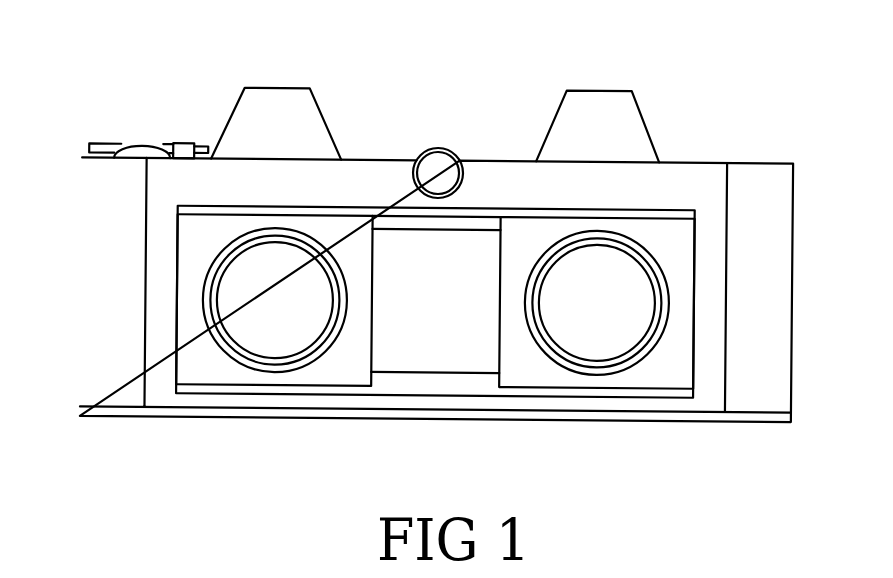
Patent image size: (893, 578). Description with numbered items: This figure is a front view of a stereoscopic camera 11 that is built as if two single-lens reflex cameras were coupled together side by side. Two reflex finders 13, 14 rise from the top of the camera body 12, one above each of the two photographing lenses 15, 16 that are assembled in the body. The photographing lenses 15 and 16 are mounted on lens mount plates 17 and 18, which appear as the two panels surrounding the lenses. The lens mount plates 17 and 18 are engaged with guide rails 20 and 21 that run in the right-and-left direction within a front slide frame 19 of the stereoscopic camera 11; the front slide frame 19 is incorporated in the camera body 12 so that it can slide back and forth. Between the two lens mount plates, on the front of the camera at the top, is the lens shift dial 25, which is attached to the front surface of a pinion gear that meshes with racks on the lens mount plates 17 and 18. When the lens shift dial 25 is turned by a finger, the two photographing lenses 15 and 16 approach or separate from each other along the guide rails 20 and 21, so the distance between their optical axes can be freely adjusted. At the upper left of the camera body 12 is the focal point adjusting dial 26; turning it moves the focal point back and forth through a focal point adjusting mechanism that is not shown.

The stereoscopic camera 11 is at (432, 118).
The camera body 12 is at (81, 228).
The reflex finder 13 is at (278, 89).
The reflex finder 14 is at (603, 91).
The photographing lens 15 is at (277, 340).
The photographing lens 16 is at (603, 340).
The lens mount plate 17 is at (200, 369).
The lens mount plate 18 is at (533, 372).
The front slide frame 19 is at (157, 298).
The guide rail 20 is at (398, 217).
The guide rail 21 is at (400, 385).
The lens shift dial 25 is at (447, 152).
The focal point adjusting dial 26 is at (138, 149).